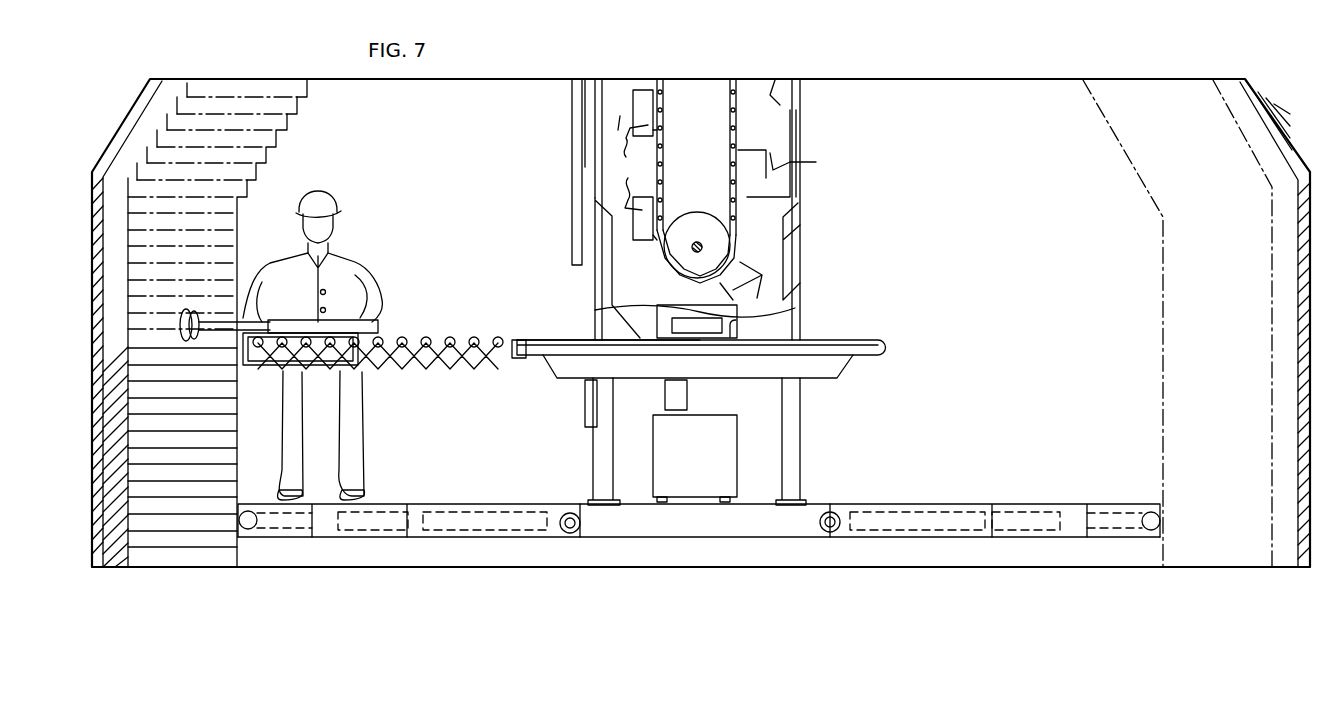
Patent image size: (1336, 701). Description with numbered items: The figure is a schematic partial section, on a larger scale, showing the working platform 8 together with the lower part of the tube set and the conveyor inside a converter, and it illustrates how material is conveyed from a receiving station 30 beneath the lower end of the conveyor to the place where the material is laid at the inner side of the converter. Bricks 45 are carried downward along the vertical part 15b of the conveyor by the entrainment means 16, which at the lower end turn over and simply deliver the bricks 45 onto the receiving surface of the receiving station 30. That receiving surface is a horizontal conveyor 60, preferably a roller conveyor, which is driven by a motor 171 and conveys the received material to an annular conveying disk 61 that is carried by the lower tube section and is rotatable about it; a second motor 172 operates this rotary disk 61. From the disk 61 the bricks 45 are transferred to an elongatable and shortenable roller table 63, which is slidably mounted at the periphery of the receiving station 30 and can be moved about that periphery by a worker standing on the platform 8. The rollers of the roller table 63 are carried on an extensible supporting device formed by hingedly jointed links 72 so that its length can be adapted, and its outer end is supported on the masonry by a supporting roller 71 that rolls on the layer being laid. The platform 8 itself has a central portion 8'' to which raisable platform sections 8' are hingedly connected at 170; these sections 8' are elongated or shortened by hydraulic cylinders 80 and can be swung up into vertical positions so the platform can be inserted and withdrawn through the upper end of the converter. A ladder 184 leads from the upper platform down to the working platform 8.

The ladder 184 is at (575, 206).
The vertical part of the conveyor 15b is at (737, 108).
The entrainment means 16 is at (725, 145).
The bricks 45 is at (646, 108).
The horizontal conveyor 60 is at (735, 328).
The annular conveying disk 61 is at (837, 340).
The receiving station 30 is at (566, 336).
The motor for operating the rotary disk 172 is at (585, 404).
The motor for operating the roller conveyor 171 is at (688, 394).
The supporting roller 71 is at (190, 318).
The roller table 63 is at (512, 340).
The hingedly jointed links 72 is at (470, 370).
The central portion of the platform 8'' is at (701, 571).
The platform 8 is at (707, 499).
The raisable platform sections 8' is at (699, 506).
The hydraulic cylinders 80 is at (495, 530).
The hinge connection 170 is at (572, 533).